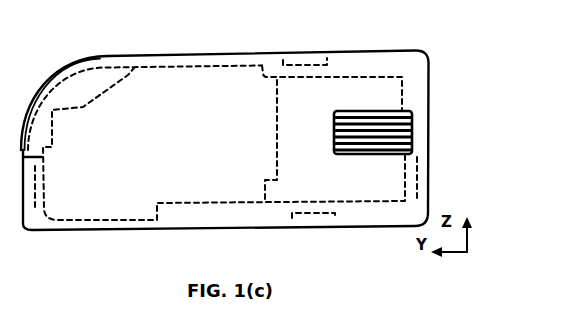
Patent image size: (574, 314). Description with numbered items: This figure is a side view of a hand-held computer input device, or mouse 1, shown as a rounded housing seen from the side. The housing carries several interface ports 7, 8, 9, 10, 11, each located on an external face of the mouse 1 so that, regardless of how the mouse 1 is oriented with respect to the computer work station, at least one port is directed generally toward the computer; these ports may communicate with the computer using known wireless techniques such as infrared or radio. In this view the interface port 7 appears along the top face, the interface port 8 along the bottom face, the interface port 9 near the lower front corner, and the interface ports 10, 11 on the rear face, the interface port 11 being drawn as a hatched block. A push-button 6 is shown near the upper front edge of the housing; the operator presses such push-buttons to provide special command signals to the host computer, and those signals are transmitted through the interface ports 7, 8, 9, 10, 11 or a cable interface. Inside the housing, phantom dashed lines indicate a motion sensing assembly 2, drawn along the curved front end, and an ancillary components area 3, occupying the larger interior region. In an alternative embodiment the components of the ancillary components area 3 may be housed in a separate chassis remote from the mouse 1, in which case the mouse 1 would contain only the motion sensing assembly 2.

The mouse 1 is at (430, 44).
The motion sensing assembly 2 is at (23, 157).
The ancillary components area 3 is at (339, 77).
The push-button 6 is at (93, 57).
The interface port 7 is at (305, 60).
The interface port 8 is at (313, 216).
The interface port 9 is at (39, 212).
The interface port 10 is at (424, 182).
The interface port 11 is at (413, 124).